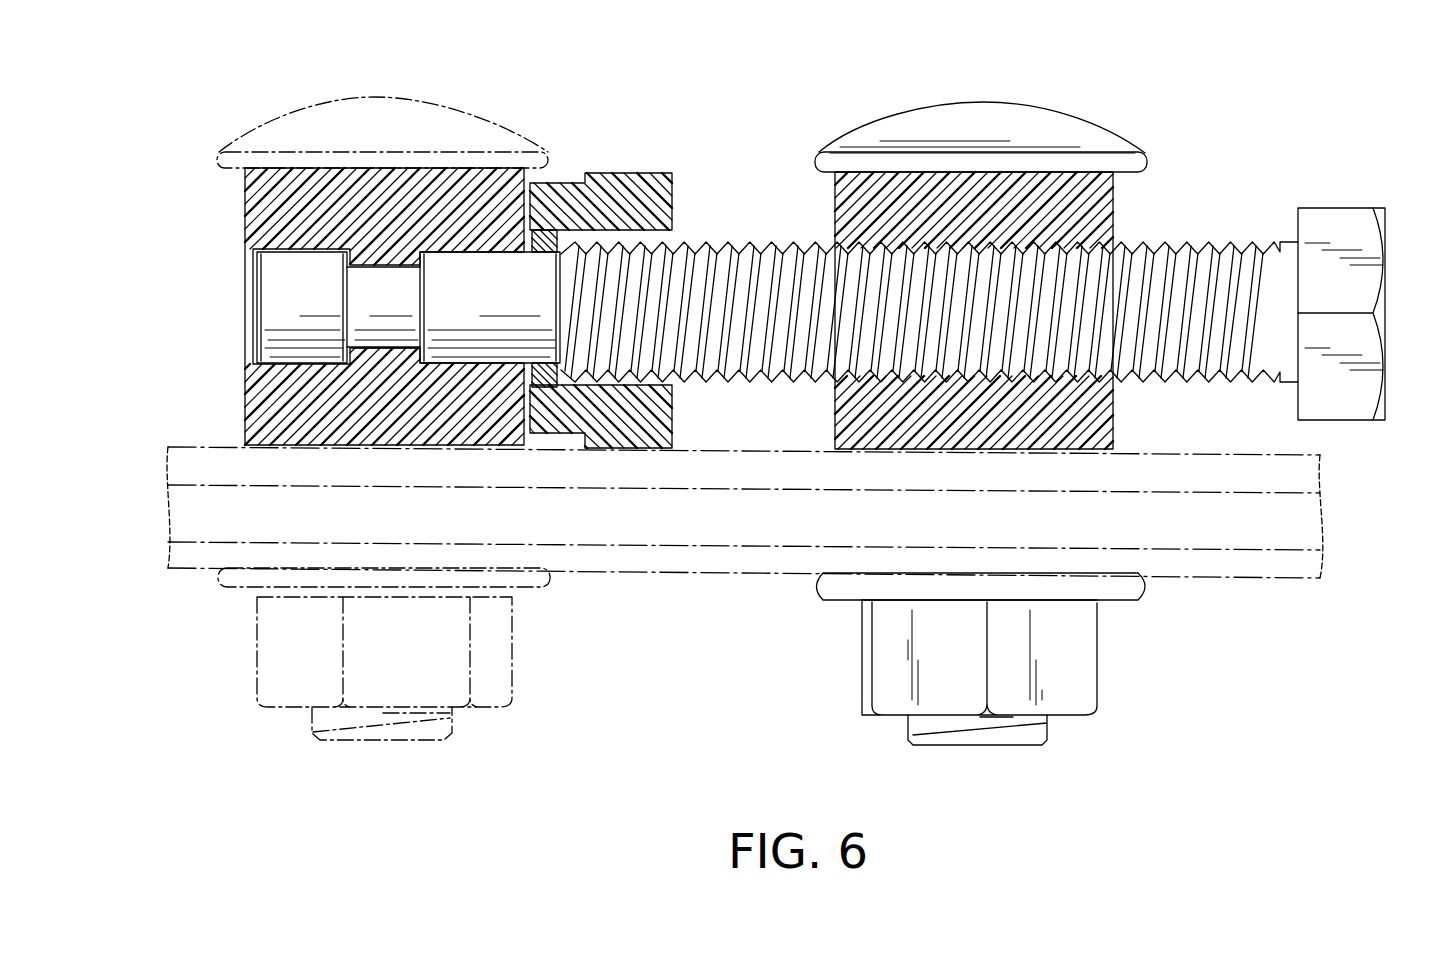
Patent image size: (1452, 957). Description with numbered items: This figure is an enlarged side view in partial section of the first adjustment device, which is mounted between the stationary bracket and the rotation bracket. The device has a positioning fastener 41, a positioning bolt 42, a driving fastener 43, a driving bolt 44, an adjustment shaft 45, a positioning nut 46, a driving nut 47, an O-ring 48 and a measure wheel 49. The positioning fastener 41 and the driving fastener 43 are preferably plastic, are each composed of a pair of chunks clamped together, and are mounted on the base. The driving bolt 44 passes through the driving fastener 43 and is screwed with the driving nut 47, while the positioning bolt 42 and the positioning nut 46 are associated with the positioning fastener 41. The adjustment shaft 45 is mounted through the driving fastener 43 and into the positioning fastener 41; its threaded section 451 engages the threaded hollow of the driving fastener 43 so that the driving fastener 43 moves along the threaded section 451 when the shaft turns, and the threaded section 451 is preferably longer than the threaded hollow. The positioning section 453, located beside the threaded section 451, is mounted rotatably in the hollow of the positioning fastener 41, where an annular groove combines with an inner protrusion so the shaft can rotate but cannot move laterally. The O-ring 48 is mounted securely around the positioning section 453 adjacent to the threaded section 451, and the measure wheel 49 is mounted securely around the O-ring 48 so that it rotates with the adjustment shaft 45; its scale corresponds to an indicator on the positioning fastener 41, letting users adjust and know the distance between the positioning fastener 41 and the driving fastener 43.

The positioning fastener 41 is at (253, 425).
The positioning bolt 42 is at (438, 117).
The driving fastener 43 is at (855, 424).
The driving bolt 44 is at (1015, 120).
The adjustment shaft 45 is at (1367, 242).
The threaded section 451 is at (1213, 360).
The positioning section 453 is at (267, 320).
The positioning nut 46 is at (493, 680).
The driving nut 47 is at (1072, 657).
The O-ring 48 is at (550, 228).
The measure wheel 49 is at (635, 173).